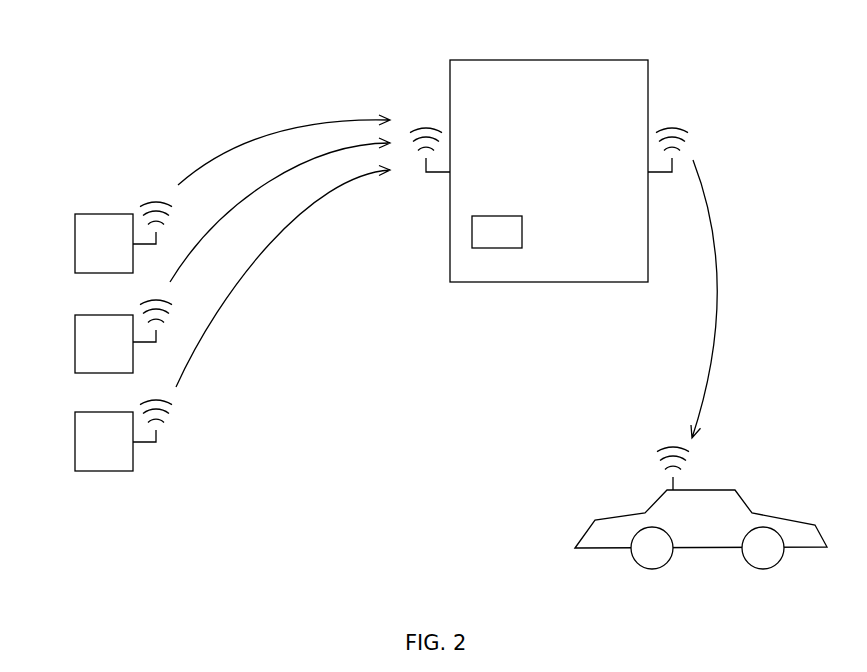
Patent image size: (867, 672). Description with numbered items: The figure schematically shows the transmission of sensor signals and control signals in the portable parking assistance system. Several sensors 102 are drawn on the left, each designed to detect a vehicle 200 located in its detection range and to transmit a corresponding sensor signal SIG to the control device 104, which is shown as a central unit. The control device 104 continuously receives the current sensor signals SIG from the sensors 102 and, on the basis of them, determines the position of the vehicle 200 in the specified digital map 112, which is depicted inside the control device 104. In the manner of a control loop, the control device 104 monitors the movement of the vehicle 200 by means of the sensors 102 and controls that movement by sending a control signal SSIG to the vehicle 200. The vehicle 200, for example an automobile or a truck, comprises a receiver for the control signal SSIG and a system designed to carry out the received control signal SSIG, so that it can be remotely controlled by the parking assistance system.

The sensors 102 is at (70, 193).
The control device 104 is at (620, 59).
The digital map 112 is at (522, 232).
The vehicle 200 is at (774, 465).
The sensor signal SIG is at (263, 106).
The control signal SSIG is at (717, 292).